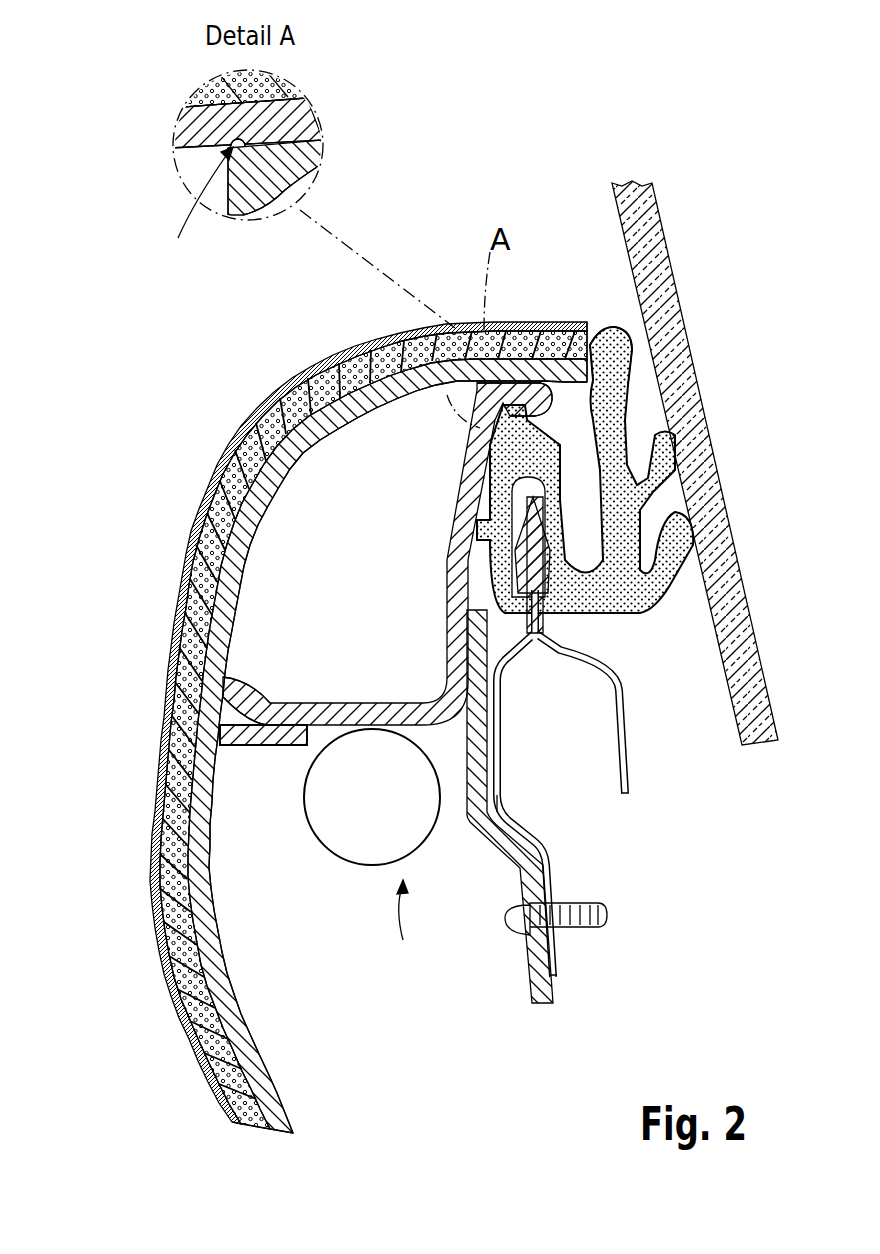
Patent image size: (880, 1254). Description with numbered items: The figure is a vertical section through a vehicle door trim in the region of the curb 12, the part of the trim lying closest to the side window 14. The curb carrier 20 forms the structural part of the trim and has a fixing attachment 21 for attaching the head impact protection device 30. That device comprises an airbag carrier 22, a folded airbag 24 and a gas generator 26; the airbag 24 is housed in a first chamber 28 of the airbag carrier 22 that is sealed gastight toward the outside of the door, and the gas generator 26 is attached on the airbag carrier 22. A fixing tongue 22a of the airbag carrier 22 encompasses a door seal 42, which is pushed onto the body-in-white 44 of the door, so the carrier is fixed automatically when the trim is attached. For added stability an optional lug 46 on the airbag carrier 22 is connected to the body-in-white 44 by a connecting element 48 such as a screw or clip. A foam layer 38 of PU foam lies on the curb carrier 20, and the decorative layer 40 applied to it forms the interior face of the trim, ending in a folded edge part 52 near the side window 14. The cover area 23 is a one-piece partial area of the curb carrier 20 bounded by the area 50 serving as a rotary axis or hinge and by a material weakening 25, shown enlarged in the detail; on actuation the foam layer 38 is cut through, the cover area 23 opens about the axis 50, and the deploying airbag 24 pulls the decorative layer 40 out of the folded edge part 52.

The curb 12 is at (326, 619).
The side window 14 is at (668, 316).
The curb carrier 20 is at (547, 360).
The fixing attachment 21 is at (230, 752).
The airbag carrier 22 is at (287, 733).
The fixing tongue 22a is at (522, 403).
The cover area 23 is at (280, 405).
The airbag 24 is at (262, 568).
The material weakening 25 is at (186, 202).
The gas generator 26 is at (353, 848).
The first chamber 28 is at (369, 563).
The head impact protection device 30 is at (415, 925).
The foam layer 38 is at (205, 1040).
The decorative layer 40 is at (185, 980).
The door seal 42 is at (560, 470).
The body-in-white 44 is at (633, 773).
The lug 46 is at (492, 857).
The connecting element 48 is at (516, 935).
The rotary axis 50 is at (226, 662).
The folded edge part 52 is at (597, 352).